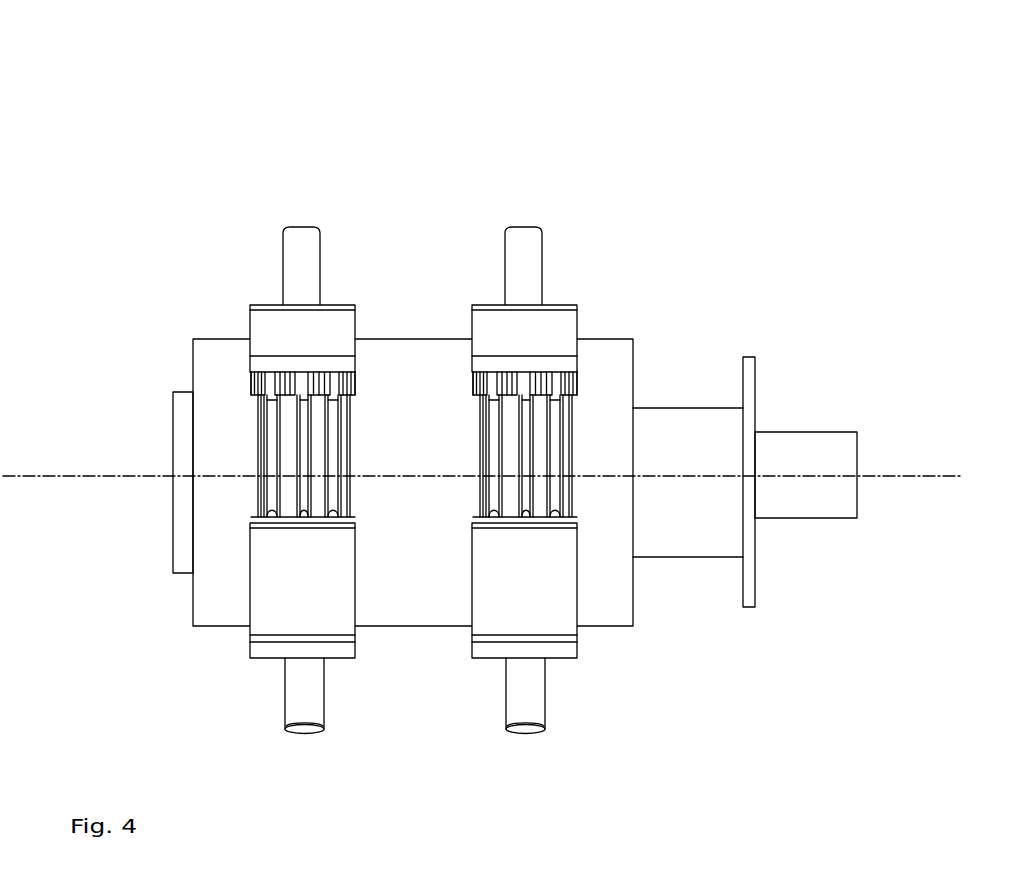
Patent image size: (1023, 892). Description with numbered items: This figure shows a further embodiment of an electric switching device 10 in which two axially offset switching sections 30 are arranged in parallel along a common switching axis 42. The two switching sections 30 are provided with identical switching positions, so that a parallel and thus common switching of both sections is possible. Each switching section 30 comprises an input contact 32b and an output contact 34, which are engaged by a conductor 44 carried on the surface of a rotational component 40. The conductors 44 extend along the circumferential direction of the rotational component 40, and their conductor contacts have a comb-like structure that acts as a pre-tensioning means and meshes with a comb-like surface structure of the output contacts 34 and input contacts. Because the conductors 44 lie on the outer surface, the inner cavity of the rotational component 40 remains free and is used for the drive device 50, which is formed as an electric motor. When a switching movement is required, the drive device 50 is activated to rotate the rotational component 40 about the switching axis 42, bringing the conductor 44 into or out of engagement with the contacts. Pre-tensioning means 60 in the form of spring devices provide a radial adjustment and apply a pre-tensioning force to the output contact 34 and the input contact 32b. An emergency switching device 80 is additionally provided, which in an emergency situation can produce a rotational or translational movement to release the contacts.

The electric switching device 10 is at (251, 140).
The switching section 30 is at (300, 207).
The input contact 32b is at (270, 316).
The output contact 34 is at (267, 636).
The rotational component 40 is at (603, 348).
The switching axis 42 is at (943, 475).
The conductor 44 is at (268, 449).
The drive device 50 is at (705, 447).
The pre-tensioning means 60 is at (262, 490).
The emergency switching device 80 is at (835, 437).